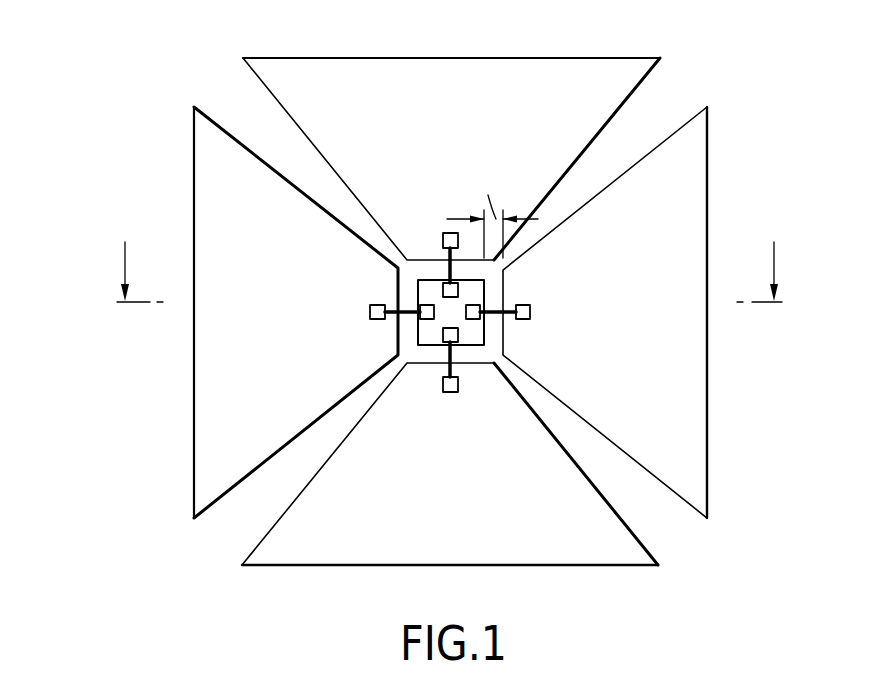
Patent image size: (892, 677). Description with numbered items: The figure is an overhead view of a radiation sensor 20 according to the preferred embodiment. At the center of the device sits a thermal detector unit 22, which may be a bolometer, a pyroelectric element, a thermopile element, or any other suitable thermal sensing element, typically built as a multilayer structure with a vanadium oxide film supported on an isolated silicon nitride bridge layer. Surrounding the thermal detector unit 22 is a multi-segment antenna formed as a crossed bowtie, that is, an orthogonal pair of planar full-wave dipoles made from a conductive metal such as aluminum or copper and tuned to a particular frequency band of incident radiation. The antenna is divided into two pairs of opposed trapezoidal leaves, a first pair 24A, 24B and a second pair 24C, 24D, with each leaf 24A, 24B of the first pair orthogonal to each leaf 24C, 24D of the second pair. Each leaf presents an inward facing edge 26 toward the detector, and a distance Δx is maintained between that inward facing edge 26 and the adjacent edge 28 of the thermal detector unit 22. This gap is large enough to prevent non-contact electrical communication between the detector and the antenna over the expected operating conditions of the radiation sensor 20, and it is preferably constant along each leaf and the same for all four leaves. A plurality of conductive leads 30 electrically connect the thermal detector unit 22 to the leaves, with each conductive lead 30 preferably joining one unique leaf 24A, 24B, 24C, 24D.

The radiation sensor 20 is at (145, 110).
The thermal detector unit 22 is at (430, 327).
The trapezoidal leaf 24A is at (692, 207).
The trapezoidal leaf 24B is at (212, 192).
The trapezoidal leaf 24C is at (380, 73).
The trapezoidal leaf 24D is at (570, 552).
The inward facing edge 26 is at (497, 327).
The adjacent edge of thermal detector unit 28 is at (487, 288).
The conductive lead 30 is at (488, 313).